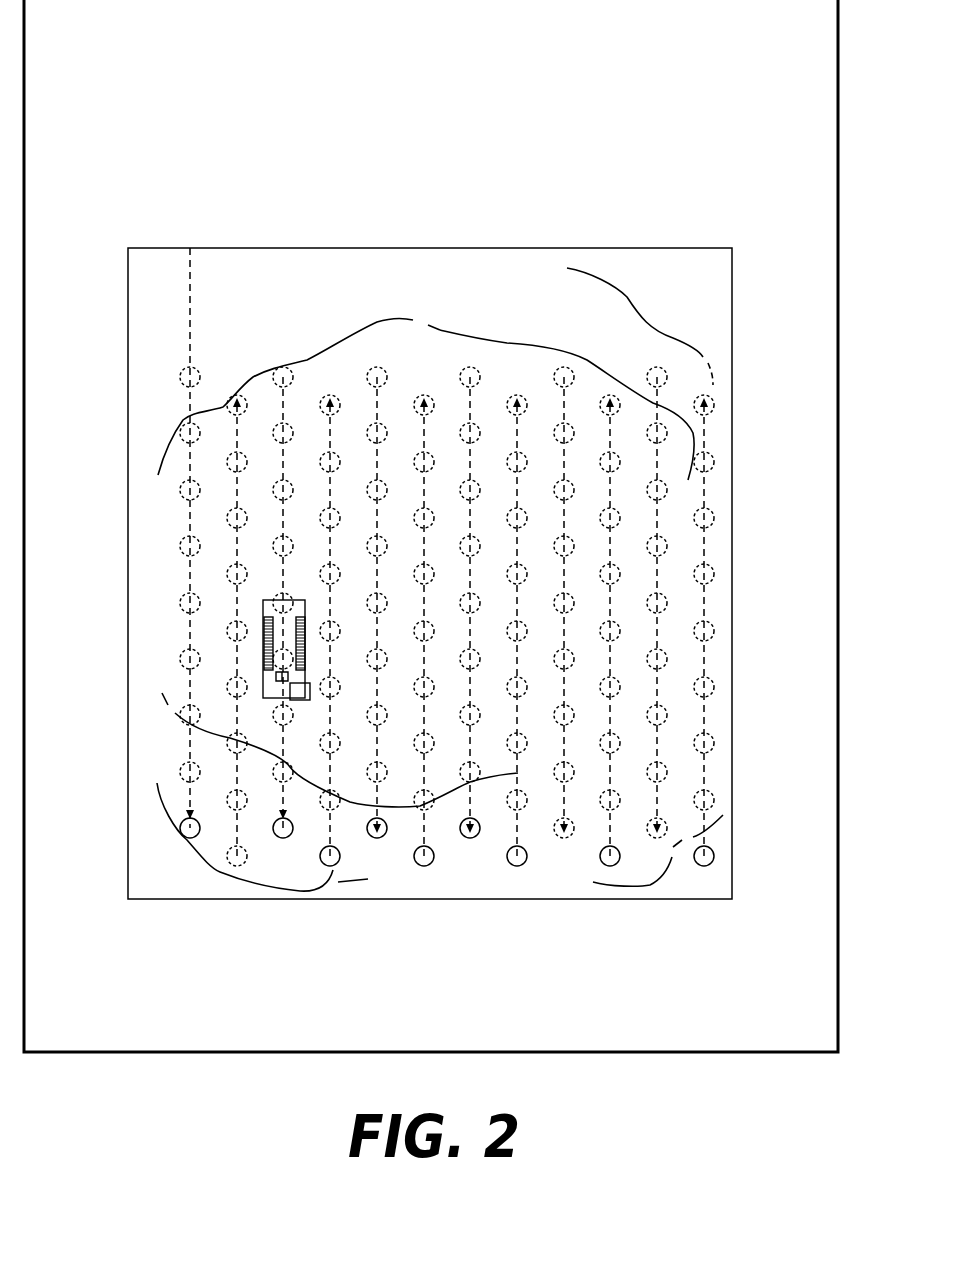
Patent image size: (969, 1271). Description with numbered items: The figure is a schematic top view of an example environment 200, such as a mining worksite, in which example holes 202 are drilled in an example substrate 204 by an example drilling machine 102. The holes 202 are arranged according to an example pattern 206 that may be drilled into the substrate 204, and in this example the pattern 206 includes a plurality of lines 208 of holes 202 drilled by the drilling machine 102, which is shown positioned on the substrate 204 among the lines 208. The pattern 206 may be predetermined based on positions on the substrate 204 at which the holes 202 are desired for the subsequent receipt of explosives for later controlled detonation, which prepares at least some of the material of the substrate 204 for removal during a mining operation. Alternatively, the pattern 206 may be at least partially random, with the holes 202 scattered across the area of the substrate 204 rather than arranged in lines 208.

The environment 200 is at (672, 212).
The drilling machine 102 is at (263, 605).
The holes 202 is at (715, 416).
The substrate 204 is at (717, 310).
The pattern 206 is at (643, 294).
The lines 208 is at (283, 527).